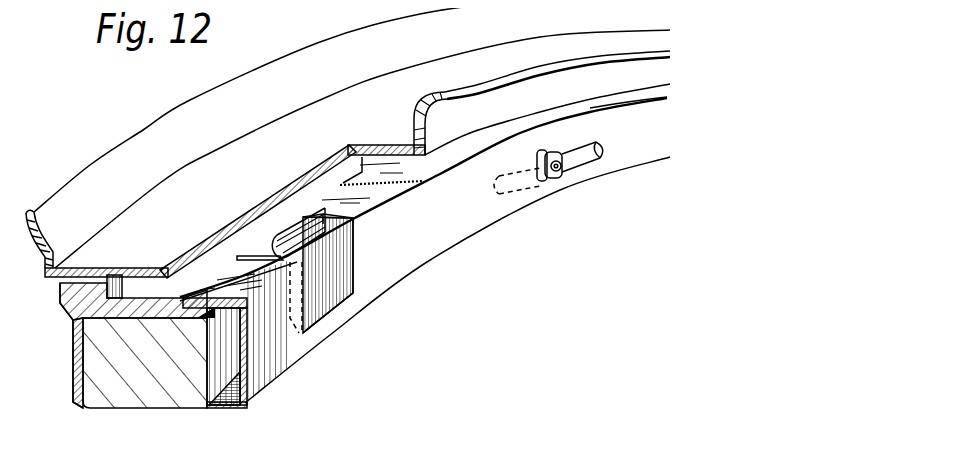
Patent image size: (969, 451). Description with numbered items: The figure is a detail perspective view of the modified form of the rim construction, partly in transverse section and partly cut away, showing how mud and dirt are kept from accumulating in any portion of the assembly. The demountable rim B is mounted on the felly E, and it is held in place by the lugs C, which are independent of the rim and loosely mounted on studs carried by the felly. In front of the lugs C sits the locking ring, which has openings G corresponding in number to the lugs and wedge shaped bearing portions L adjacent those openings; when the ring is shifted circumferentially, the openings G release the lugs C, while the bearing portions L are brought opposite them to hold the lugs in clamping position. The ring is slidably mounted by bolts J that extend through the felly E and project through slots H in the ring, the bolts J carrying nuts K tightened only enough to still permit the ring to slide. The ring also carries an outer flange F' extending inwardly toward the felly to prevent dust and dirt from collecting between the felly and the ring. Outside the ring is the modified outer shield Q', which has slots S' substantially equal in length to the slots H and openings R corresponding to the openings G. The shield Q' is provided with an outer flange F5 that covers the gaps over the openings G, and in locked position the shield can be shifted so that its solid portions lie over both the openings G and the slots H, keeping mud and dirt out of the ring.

The demountable rim B is at (348, 143).
The lugs C is at (295, 222).
The felly E is at (153, 367).
The outer flange F' is at (277, 296).
The outer flange of the shield F5 is at (695, 122).
The openings G is at (297, 335).
The slots H is at (514, 191).
The bolts J is at (561, 168).
The nuts K is at (557, 180).
The wedge shaped bearing portions L is at (323, 240).
The outer shield Q' is at (457, 280).
The openings in the shield R is at (336, 308).
The slots of the shield S' is at (603, 143).